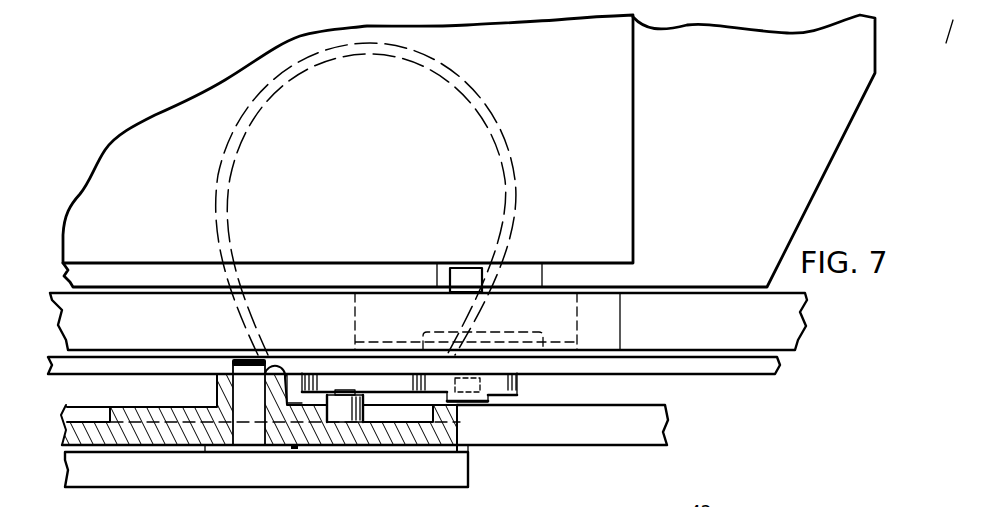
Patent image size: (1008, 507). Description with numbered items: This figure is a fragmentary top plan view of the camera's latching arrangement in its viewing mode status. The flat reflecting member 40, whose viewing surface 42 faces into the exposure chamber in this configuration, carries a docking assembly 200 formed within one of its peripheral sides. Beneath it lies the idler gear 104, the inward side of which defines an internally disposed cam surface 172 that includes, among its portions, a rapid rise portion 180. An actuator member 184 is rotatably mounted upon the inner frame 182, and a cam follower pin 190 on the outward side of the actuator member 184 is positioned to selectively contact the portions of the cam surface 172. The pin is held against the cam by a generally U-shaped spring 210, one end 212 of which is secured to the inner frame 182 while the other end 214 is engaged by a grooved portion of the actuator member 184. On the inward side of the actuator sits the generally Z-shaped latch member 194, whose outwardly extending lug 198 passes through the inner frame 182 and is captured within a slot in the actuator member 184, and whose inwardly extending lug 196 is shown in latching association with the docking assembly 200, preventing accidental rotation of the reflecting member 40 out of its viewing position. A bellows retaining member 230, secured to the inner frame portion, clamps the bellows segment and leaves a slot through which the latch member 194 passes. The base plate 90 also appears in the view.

The reflecting member 40 is at (660, 148).
The viewing surface 42 is at (596, 173).
The base plate 90 is at (178, 462).
The idler gear 104 is at (457, 437).
The cam surface 172 is at (175, 419).
The rapid rise portion 180 is at (253, 430).
The inner frame 182 is at (677, 365).
The actuator member 184 is at (392, 383).
The cam follower pin 190 is at (345, 412).
The latch member 194 is at (380, 310).
The inwardly extending lug 196 is at (472, 275).
The outwardly extending lug 198 is at (478, 378).
The docking assembly 200 is at (462, 268).
The U-shaped spring 210 is at (452, 74).
The spring end 212 is at (260, 357).
The spring end 214 is at (465, 397).
The bellows retaining member 230 is at (648, 307).